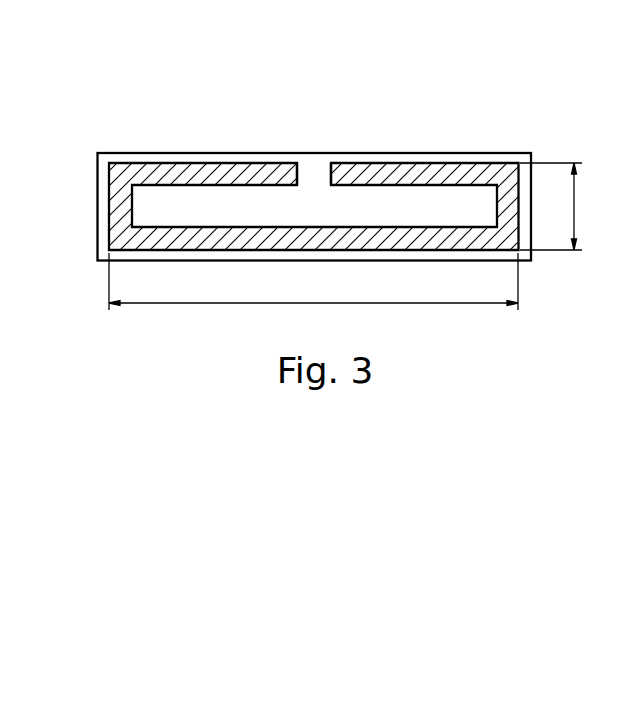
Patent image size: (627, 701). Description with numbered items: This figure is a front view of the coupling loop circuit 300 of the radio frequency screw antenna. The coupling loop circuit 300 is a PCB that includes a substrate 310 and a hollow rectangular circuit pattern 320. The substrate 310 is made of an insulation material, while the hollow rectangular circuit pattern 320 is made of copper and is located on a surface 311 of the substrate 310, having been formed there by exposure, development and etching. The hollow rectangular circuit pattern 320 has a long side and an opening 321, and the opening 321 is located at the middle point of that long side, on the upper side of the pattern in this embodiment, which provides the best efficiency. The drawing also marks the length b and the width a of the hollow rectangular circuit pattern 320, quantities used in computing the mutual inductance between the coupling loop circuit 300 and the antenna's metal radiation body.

The coupling loop circuit 300 is at (67, 49).
The substrate 310 is at (510, 153).
The surface 311 is at (447, 157).
The hollow rectangular circuit pattern 320 is at (387, 170).
The opening 321 is at (316, 152).